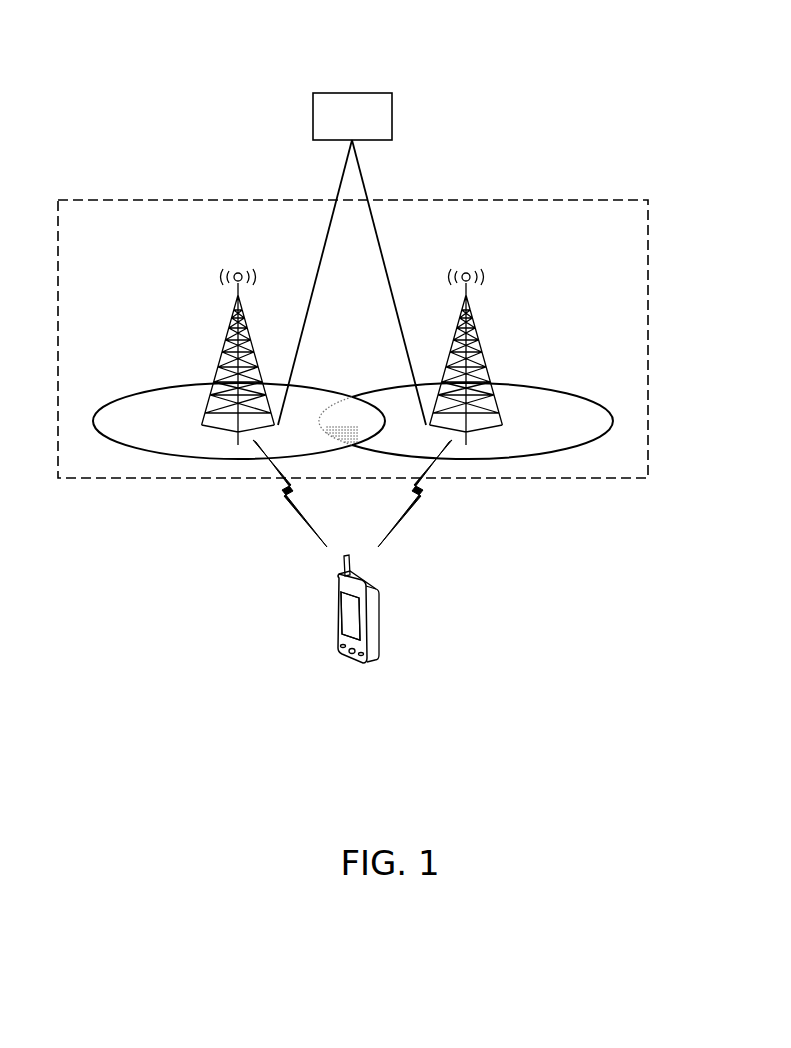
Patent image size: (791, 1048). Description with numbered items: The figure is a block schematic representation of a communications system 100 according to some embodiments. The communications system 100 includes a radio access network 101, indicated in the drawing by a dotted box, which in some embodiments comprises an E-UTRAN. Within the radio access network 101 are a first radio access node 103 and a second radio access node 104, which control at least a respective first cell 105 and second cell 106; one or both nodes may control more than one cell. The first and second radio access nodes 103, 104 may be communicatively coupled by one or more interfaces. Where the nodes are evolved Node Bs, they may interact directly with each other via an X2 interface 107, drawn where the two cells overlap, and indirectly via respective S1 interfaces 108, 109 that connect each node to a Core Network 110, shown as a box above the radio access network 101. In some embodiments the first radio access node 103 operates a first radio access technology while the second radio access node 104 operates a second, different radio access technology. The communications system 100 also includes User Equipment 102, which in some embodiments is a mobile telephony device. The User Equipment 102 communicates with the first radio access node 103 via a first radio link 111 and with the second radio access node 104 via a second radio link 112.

The communications system 100 is at (481, 63).
The radio access network 101 is at (536, 199).
The User Equipment 102 is at (380, 621).
The first radio access node 103 is at (222, 344).
The second radio access node 104 is at (481, 351).
The first cell 105 is at (135, 397).
The second cell 106 is at (558, 397).
The X2 interface 107 is at (353, 394).
The S1 interface 108 is at (315, 277).
The S1 interface 109 is at (390, 277).
The Core Network 110 is at (342, 125).
The first radio link 111 is at (288, 500).
The second radio link 112 is at (416, 500).